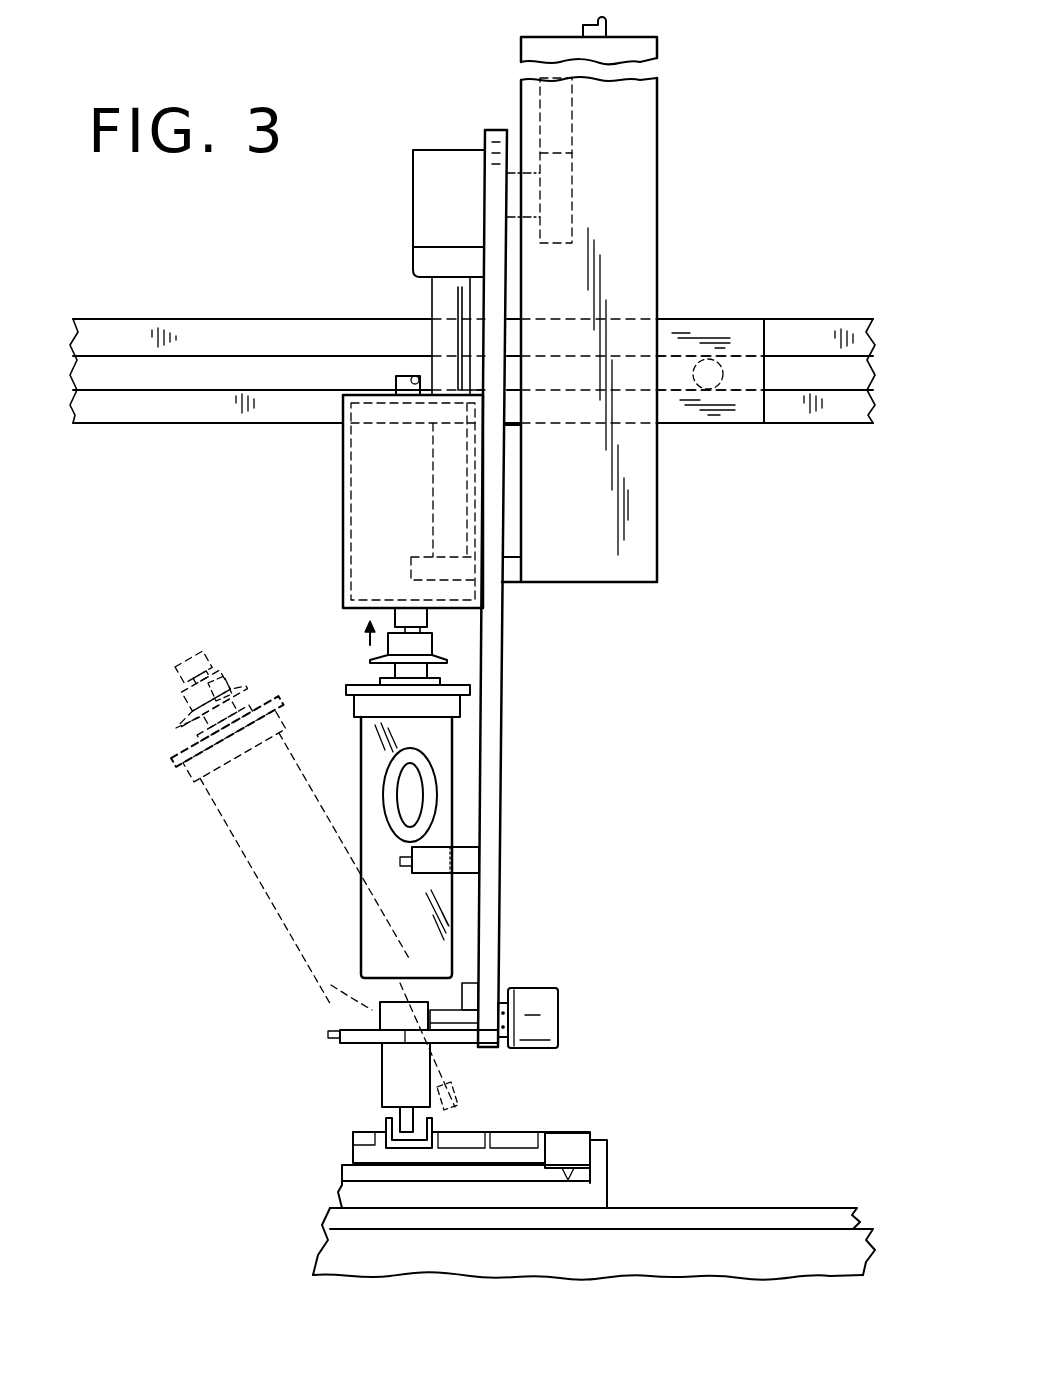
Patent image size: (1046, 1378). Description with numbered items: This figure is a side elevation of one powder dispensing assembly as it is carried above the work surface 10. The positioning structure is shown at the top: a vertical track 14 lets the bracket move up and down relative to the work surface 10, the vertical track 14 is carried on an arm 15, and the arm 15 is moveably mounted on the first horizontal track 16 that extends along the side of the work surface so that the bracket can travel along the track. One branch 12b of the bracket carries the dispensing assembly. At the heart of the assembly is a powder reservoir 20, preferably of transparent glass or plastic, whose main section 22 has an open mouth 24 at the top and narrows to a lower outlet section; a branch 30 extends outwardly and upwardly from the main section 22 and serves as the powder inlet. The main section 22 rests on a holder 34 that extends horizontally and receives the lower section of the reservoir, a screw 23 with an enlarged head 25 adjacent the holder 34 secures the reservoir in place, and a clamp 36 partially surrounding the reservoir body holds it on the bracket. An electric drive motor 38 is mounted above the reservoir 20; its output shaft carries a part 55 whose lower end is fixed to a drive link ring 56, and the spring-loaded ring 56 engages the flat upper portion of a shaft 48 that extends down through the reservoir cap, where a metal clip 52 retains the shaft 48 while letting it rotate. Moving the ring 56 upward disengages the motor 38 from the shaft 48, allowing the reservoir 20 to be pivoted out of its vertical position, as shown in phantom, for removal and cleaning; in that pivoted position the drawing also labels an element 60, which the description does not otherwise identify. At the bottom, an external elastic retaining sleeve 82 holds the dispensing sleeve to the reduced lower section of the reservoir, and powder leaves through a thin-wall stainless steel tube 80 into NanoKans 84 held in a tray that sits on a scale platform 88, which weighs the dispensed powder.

The work surface 10 is at (768, 1208).
The branch of bracket 12b is at (488, 737).
The vertical track 14 is at (622, 210).
The arm 15 is at (697, 338).
The first horizontal track 16 is at (264, 337).
The powder reservoir 20 is at (440, 825).
The main section 22 is at (414, 915).
The screw 23 is at (457, 1017).
The open mouth 24 is at (437, 706).
The enlarged head 25 is at (542, 1023).
The branch 30 is at (415, 790).
The holder 34 is at (340, 1037).
The clamp 36 is at (465, 862).
The electric drive motor 38 is at (375, 518).
The shaft 48 is at (178, 730).
The metal clip 52 is at (375, 680).
The part 55 is at (478, 622).
The drive link ring 56 is at (420, 658).
The connector 60 is at (210, 693).
The stainless steel tube 80 is at (413, 1113).
The external elastic retaining sleeve 82 is at (390, 1080).
The NanoKans 84 is at (383, 1120).
The scale platform 88 is at (537, 1133).